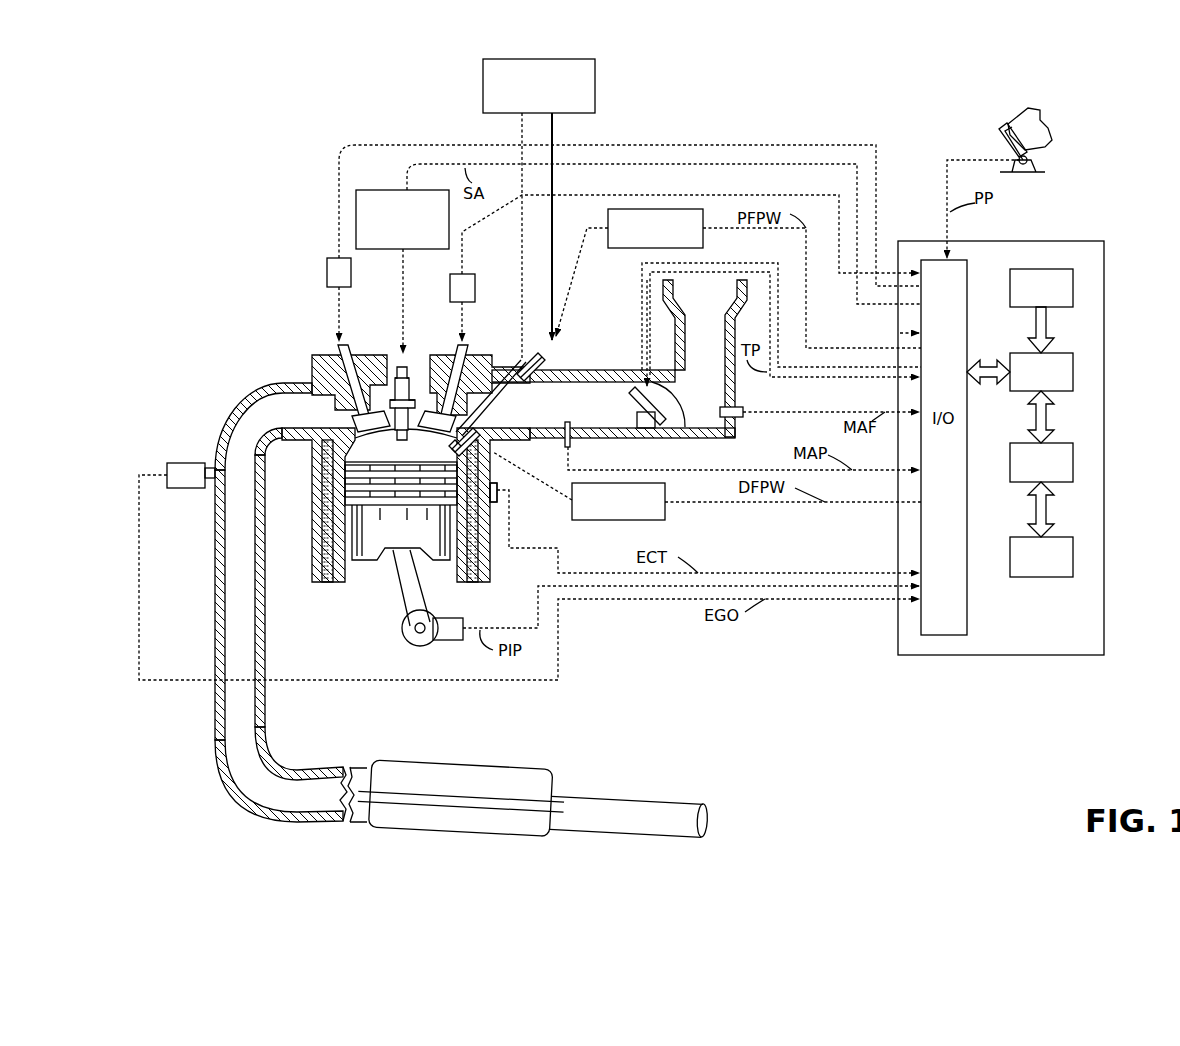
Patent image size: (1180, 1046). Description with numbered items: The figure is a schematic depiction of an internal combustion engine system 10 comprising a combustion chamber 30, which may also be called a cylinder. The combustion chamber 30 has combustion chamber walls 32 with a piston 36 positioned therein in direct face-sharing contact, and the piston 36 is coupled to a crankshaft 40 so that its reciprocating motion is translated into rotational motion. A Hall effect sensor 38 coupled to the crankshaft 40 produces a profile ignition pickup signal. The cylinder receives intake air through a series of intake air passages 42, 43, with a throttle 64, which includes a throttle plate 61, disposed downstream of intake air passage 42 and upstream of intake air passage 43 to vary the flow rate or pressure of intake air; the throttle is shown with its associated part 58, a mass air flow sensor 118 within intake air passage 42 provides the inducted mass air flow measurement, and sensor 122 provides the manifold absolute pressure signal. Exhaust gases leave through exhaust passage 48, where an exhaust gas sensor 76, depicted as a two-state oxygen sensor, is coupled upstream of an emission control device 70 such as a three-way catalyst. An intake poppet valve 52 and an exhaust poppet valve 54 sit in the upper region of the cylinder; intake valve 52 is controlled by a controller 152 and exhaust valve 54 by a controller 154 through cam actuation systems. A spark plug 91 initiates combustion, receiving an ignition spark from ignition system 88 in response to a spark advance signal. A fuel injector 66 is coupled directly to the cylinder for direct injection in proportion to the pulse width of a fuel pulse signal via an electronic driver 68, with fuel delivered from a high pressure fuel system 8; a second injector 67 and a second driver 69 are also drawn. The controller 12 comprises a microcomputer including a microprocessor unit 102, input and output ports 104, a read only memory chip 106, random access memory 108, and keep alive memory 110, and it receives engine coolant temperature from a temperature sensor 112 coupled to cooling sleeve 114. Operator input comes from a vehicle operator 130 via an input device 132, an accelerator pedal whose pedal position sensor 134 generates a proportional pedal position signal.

The fuel system 8 is at (539, 86).
The engine system 10 is at (252, 318).
The controller 12 is at (1035, 433).
The combustion chamber 30 is at (322, 545).
The combustion chamber walls 32 is at (350, 575).
The piston 36 is at (395, 556).
The Hall effect sensor 38 is at (448, 642).
The crankshaft 40 is at (405, 640).
The intake air passage 42 is at (705, 358).
The intake air passage 43 is at (613, 404).
The exhaust passage 48 is at (279, 602).
The intake poppet valve 52 is at (452, 370).
The exhaust poppet valve 54 is at (352, 388).
The throttle 58 is at (672, 430).
The throttle plate 61 is at (652, 432).
The throttle 64 is at (640, 425).
The fuel injector 66 is at (537, 345).
The direct fuel injector 67 is at (483, 452).
The electronic driver 68 is at (618, 501).
The electronic driver 69 is at (655, 228).
The emission control device 70 is at (512, 768).
The exhaust gas sensor 76 is at (165, 467).
The ignition system 88 is at (373, 190).
The spark plug 91 is at (401, 360).
The microprocessor unit 102 is at (1073, 372).
The input and output ports 104 is at (967, 262).
The read only memory chip 106 is at (1073, 285).
The random access memory 108 is at (1073, 462).
The keep alive memory 110 is at (1073, 557).
The temperature sensor 112 is at (500, 492).
The cooling sleeve 114 is at (488, 560).
The mass air flow sensor 118 is at (745, 407).
The manifold pressure sensor 122 is at (565, 440).
The vehicle operator 130 is at (1052, 128).
The input device 132 is at (1008, 133).
The pedal position sensor 134 is at (1030, 158).
The controller 152 is at (450, 290).
The controller 154 is at (327, 274).